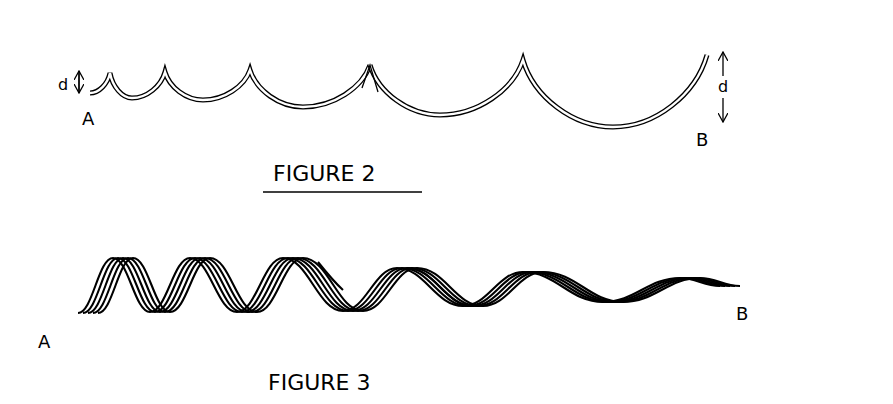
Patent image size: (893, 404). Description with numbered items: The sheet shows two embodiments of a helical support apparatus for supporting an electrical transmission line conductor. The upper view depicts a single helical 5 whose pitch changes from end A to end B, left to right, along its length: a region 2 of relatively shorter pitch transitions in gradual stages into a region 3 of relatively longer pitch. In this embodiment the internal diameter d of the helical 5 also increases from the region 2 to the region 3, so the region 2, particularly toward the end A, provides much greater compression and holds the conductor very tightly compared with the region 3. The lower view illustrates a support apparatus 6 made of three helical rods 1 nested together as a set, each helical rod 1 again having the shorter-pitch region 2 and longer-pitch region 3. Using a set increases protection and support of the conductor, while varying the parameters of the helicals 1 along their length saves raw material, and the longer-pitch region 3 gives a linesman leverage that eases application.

In FIG. 3, the helical rod 1 is at (330, 275).
In FIG. 2, the region of relatively shorter pitch 2 is at (347, 38).
In FIG. 3, the region of relatively shorter pitch 2 is at (353, 331).
In FIG. 2, the region of relatively longer pitch 3 is at (683, 41).
In FIG. 3, the region of relatively longer pitch 3 is at (697, 327).
In FIG. 2, the helical 5 is at (383, 50).
In FIG. 3, the support apparatus 6 is at (430, 260).